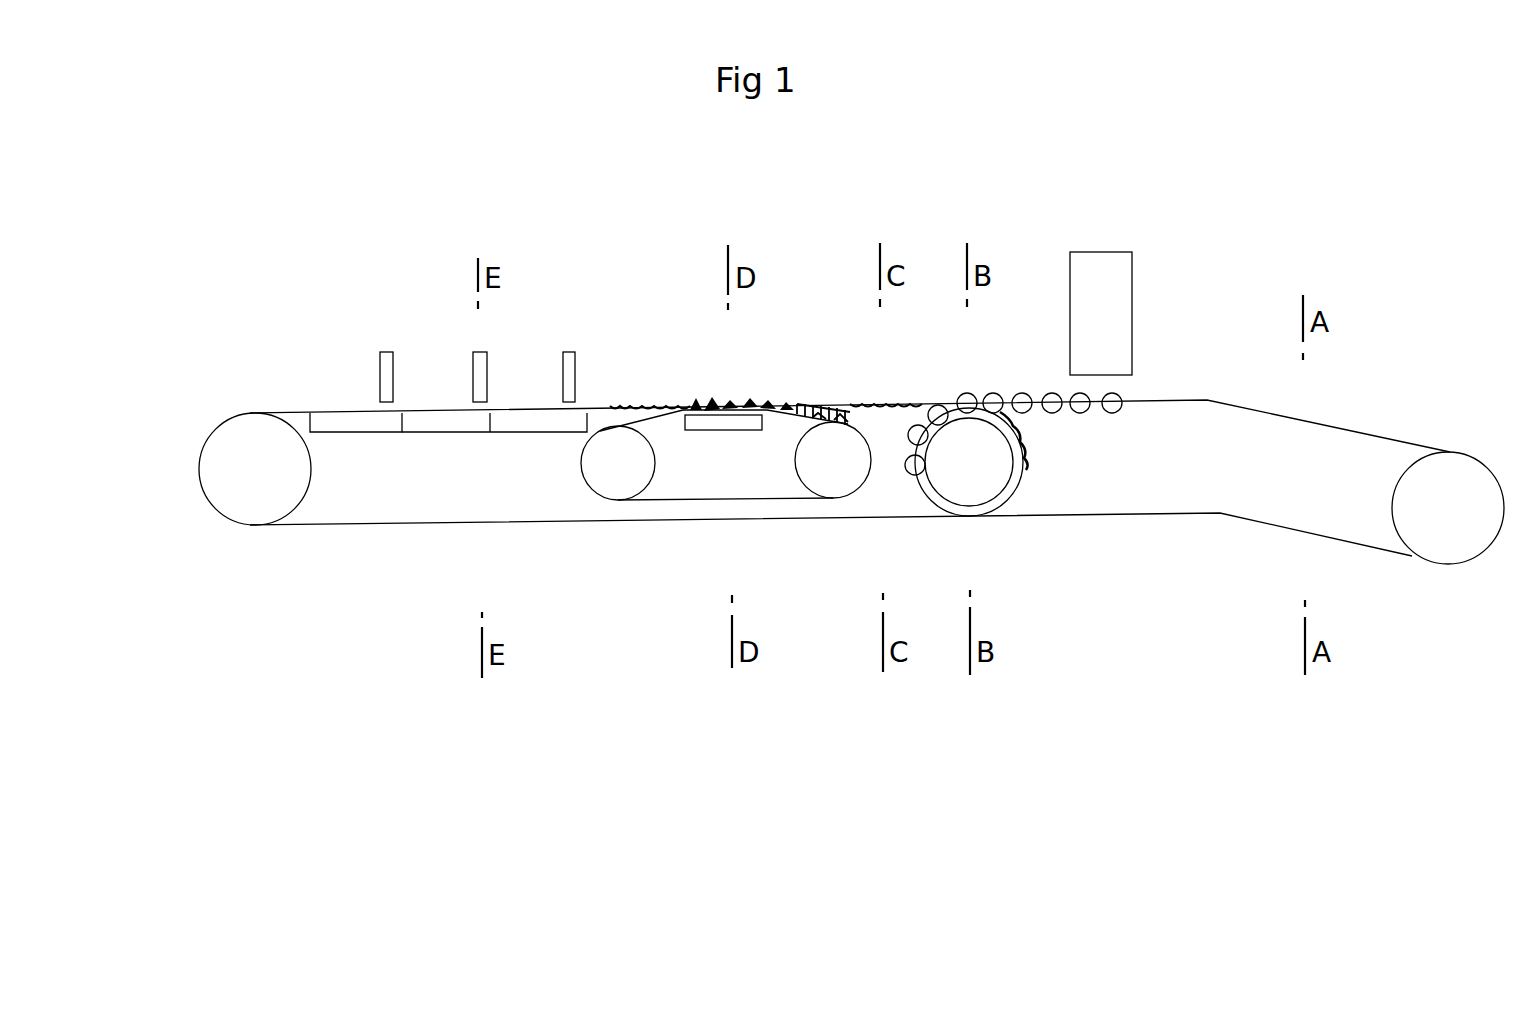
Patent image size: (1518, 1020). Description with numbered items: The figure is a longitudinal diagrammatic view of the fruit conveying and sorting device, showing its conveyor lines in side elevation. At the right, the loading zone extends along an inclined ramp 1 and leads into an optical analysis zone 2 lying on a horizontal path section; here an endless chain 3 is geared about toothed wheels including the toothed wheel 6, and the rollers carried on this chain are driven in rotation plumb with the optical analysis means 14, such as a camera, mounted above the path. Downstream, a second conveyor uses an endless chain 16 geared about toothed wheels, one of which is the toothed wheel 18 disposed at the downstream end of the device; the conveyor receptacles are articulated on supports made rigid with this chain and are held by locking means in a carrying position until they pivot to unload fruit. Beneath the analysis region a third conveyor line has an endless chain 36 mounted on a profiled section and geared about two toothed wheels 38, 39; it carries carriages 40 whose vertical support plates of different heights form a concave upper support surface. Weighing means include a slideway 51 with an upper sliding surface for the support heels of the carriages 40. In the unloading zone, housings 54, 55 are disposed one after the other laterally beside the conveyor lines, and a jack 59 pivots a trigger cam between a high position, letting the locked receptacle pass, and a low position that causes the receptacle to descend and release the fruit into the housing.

The inclined ramp 1 is at (850, 435).
The optical analysis zone 2 is at (1153, 398).
The endless chain 3 is at (1149, 514).
The toothed wheel 6 is at (1452, 458).
The optical analysis means 14 is at (1122, 270).
The endless chain 16 is at (872, 517).
The toothed wheel 18 is at (212, 438).
The endless chain 36 is at (702, 493).
The toothed wheel 38 is at (590, 493).
The toothed wheel 39 is at (847, 498).
The carriage 40 is at (697, 402).
The slideway 51 is at (712, 428).
The housing 54 is at (518, 433).
The housing 55 is at (422, 433).
The jack 59 is at (572, 368).